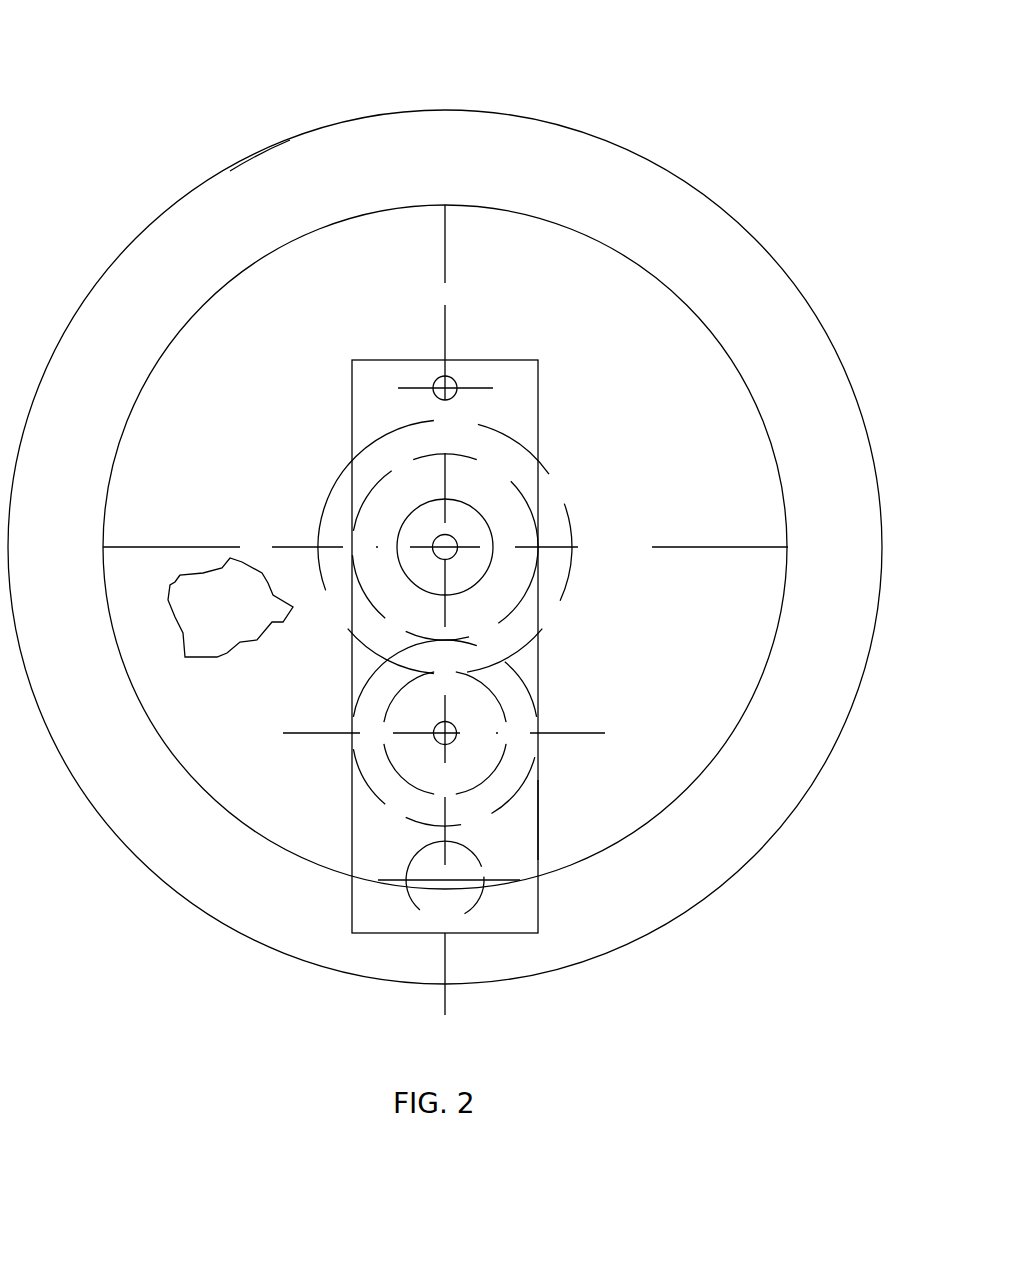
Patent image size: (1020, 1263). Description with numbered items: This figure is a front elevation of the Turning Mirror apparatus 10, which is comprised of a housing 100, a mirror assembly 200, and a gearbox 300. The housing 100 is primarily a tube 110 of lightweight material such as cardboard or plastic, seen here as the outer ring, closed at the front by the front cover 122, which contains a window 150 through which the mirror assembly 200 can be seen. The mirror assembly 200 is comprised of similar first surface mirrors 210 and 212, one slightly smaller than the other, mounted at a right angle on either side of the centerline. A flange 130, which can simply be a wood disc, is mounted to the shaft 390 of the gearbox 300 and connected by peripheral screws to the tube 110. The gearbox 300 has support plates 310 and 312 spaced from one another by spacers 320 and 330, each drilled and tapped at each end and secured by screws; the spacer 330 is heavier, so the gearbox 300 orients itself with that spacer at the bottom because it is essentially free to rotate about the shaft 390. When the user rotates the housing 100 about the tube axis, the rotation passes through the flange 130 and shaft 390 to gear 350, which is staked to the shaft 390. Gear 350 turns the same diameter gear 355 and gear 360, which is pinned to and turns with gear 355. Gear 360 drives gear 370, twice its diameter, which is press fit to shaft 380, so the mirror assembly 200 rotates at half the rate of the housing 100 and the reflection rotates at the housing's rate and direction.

The Turning Mirror apparatus 10 is at (604, 26).
The housing 100 is at (160, 182).
The tube 110 is at (259, 150).
The front cover 122 is at (86, 489).
The flange 130 is at (245, 616).
The window 150 is at (705, 770).
The mirror assembly 200 is at (660, 421).
The first surface mirror 210 is at (326, 295).
The first surface mirror 212 is at (556, 295).
The gearbox 300 is at (330, 440).
The support plate 310 is at (533, 803).
The support plate 312 is at (533, 838).
The spacer 320 is at (430, 375).
The spacer 330 is at (410, 860).
The gear 350 is at (515, 484).
The gear 355 is at (450, 669).
The gear 360 is at (393, 690).
The gear 370 is at (318, 529).
The shaft 380 is at (455, 560).
The shaft 390 is at (457, 541).